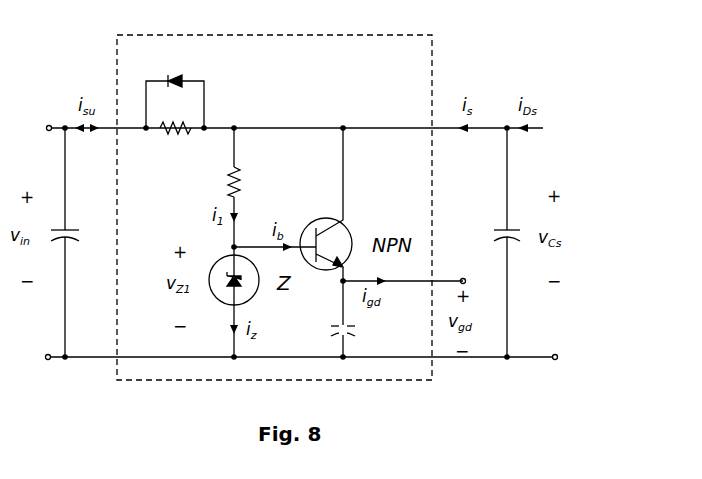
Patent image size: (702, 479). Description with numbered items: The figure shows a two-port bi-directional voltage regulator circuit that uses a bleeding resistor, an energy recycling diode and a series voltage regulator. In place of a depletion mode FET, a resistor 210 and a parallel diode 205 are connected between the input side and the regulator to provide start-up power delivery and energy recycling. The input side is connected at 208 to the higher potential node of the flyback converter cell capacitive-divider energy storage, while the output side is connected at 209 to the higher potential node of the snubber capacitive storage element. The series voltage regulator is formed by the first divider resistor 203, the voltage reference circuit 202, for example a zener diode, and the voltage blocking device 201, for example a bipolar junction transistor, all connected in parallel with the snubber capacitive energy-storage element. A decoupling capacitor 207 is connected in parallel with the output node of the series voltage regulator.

The voltage blocking device 201 is at (349, 212).
The voltage reference circuit 202 is at (222, 313).
The resistor R1 203 is at (181, 187).
The parallel diode 205 is at (199, 62).
The decoupling capacitor 207 is at (361, 325).
The higher potential node connection of the capacitive-divider energy storage 208 is at (75, 248).
The higher potential node of the snubber capacitive storage element 209 is at (518, 253).
The resistor 210 is at (212, 100).